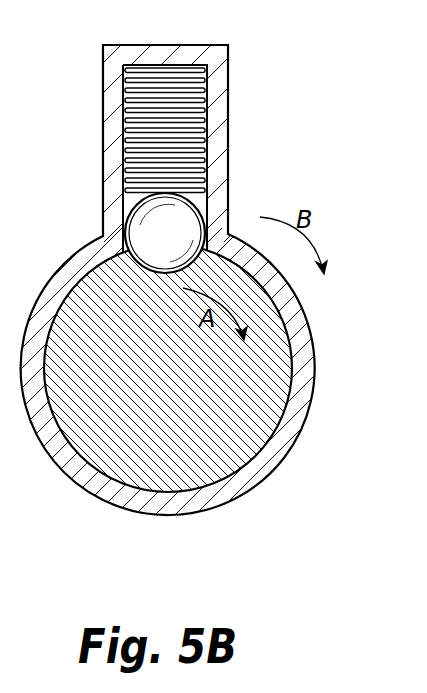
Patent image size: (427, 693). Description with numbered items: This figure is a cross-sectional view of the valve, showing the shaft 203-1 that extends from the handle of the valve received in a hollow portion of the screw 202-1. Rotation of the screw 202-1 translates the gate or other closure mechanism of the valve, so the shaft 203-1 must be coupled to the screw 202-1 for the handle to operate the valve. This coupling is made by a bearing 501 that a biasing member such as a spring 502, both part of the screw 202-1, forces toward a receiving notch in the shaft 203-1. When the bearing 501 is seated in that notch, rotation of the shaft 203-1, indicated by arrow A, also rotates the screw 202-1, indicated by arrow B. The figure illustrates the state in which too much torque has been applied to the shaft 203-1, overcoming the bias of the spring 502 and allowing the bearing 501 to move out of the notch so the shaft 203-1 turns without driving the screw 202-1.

The screw 202-1 is at (275, 450).
The shaft 203-1 is at (258, 383).
The bearing 501 is at (152, 232).
The spring 502 is at (193, 110).